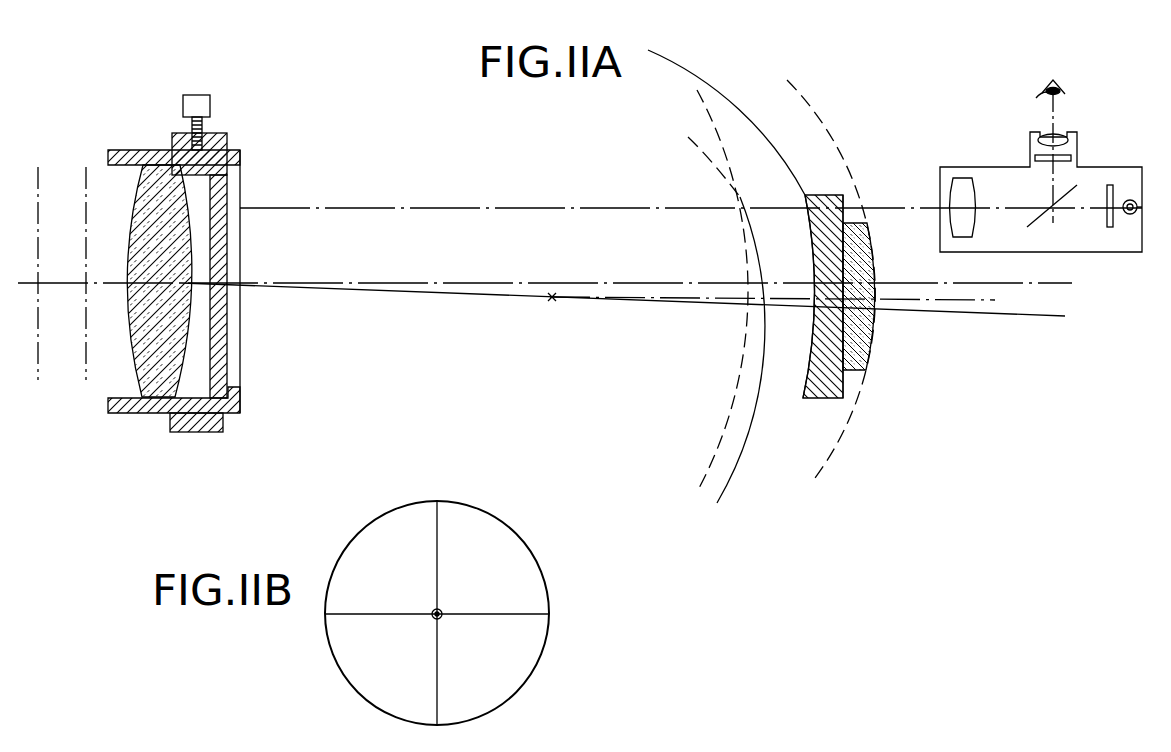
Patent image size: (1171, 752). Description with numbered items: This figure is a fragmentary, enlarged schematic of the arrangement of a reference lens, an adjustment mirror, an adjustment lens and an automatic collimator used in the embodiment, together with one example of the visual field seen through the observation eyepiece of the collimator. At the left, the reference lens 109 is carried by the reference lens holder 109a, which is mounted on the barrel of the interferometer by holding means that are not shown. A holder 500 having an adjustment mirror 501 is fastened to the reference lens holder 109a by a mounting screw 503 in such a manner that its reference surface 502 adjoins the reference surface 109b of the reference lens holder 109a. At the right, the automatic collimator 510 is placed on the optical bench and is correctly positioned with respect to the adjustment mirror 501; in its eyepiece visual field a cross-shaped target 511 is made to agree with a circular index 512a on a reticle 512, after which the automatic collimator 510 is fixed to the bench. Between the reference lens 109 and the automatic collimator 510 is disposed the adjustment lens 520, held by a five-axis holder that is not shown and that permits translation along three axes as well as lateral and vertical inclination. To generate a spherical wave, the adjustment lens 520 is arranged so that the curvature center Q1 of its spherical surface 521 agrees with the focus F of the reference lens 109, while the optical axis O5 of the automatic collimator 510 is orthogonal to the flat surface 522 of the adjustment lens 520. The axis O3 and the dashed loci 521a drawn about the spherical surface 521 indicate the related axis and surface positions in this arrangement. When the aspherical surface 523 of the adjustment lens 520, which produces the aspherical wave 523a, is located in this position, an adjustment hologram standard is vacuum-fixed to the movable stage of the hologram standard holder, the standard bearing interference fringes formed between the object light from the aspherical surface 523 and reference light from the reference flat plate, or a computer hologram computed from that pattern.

In FIG. 11A, the reference lens 109 is at (140, 355).
In FIG. 11A, the reference lens holder 109a is at (137, 413).
In FIG. 11A, the reference surface of the reference lens holder 109b is at (222, 432).
In FIG. 11A, the holder 500 is at (228, 140).
In FIG. 11A, the adjustment mirror 501 is at (225, 357).
In FIG. 11A, the reference surface 502 is at (232, 170).
In FIG. 11A, the mounting screw 503 is at (210, 103).
In FIG. 11A, the automatic collimator 510 is at (1110, 167).
In FIG. 11A, the cross-shaped target 511 is at (1110, 225).
In FIG. 11B, the cross-shaped target 511 is at (525, 614).
In FIG. 11A, the reticle 512 is at (1078, 150).
In FIG. 11B, the circular index 512a is at (441, 608).
In FIG. 11A, the adjustment lens 520 is at (830, 195).
In FIG. 11A, the spherical surface 521 is at (813, 238).
In FIG. 11A, the reflecting surface locus 521a is at (712, 433).
In FIG. 11A, the flat surface 522 is at (845, 394).
In FIG. 11A, the aspherical surface 523 is at (878, 350).
In FIG. 11A, the aspherical wave 523a is at (713, 105).
In FIG. 11A, the optical axis of lens 109 O3 is at (425, 293).
In FIG. 11A, the optical axis of the automatic collimator O5 is at (630, 208).
In FIG. 11A, the focus of the reference lens F is at (553, 294).
In FIG. 11A, the curvature center of the spherical surface Q1 is at (556, 299).